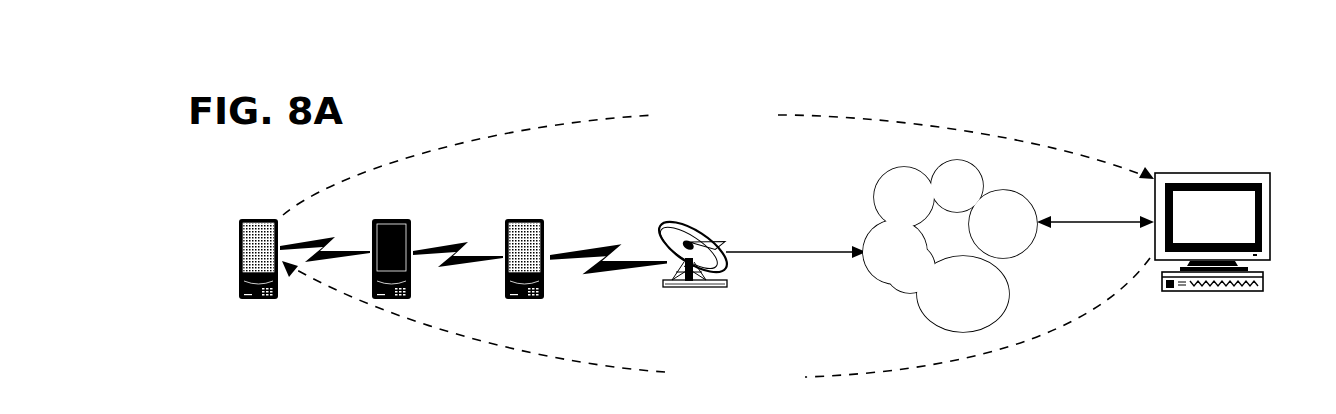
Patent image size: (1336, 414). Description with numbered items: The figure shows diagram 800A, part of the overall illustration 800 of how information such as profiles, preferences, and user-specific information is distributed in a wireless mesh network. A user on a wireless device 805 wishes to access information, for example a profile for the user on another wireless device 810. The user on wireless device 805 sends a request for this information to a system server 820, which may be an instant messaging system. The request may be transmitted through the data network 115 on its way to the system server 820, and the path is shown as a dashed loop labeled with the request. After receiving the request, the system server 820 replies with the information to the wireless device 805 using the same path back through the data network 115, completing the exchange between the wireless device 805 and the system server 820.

The system 800 is at (762, 40).
The diagram 800A is at (549, 85).
The wireless device 805 is at (240, 243).
The wireless device 810 is at (398, 219).
The data network 115 is at (880, 180).
The system server 820 is at (1228, 173).